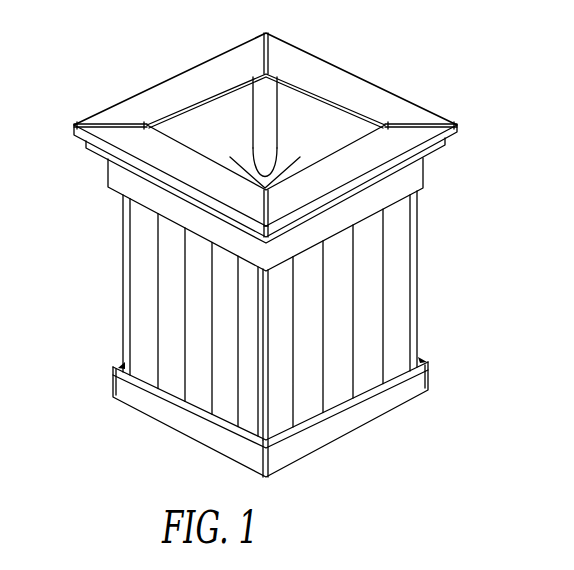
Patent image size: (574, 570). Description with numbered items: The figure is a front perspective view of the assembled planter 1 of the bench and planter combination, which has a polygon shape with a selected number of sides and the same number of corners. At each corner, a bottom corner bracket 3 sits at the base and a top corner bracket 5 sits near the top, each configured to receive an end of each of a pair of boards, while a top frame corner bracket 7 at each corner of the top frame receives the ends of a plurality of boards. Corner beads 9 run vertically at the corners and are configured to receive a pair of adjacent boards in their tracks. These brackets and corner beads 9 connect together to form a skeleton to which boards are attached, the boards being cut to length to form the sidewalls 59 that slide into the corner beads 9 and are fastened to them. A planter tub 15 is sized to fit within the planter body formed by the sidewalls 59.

The planter 1 is at (139, 68).
The bottom corner bracket 3 is at (112, 387).
The top corner bracket 5 is at (107, 173).
The top frame corner bracket 7 is at (265, 138).
The corner bead 9 is at (122, 278).
The planter tub 15 is at (322, 120).
The sidewall 59 is at (372, 270).